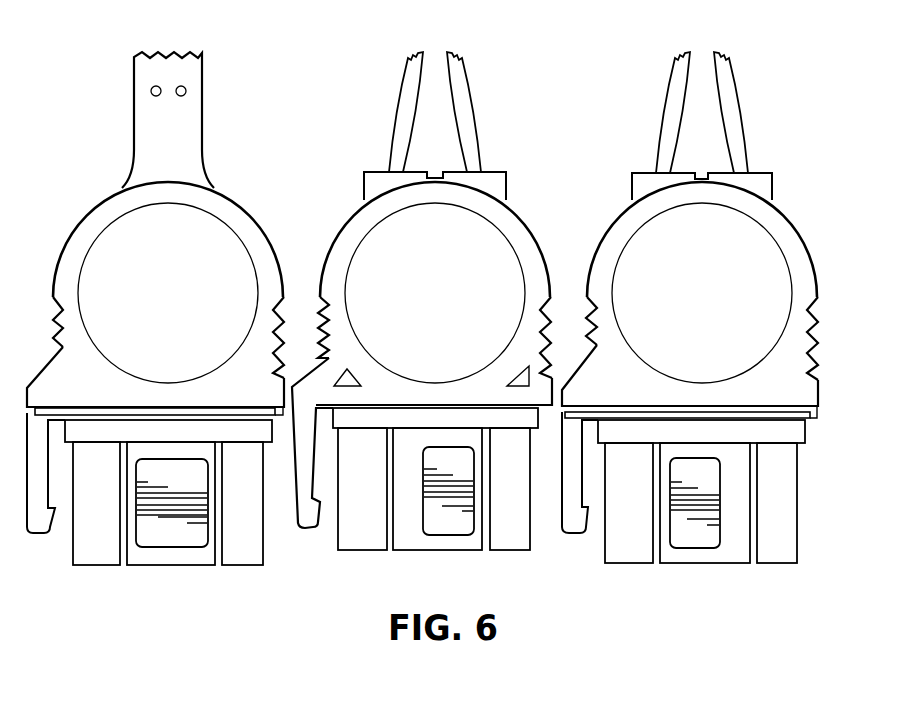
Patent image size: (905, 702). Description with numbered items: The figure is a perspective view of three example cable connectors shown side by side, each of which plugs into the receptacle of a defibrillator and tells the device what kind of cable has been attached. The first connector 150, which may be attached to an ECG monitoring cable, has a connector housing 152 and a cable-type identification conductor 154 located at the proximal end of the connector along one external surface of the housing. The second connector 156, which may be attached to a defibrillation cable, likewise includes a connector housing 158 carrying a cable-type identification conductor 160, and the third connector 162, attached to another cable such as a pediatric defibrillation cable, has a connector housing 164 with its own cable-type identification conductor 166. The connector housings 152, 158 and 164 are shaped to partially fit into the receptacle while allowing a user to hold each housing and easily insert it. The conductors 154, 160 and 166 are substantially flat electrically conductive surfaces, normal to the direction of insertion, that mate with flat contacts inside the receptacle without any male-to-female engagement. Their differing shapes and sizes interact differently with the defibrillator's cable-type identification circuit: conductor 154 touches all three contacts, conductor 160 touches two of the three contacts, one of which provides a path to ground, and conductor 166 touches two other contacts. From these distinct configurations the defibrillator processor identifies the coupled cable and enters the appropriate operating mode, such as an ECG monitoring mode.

The connector 150 is at (240, 146).
The connector housing 152 is at (268, 237).
The cable-type identification conductor 154 is at (170, 548).
The connector 162 is at (506, 146).
The connector housing 164 is at (534, 238).
The cable-type identification conductor 166 is at (448, 536).
The connector 156 is at (773, 147).
The connector housing 158 is at (802, 237).
The cable-type identification conductor 160 is at (693, 549).